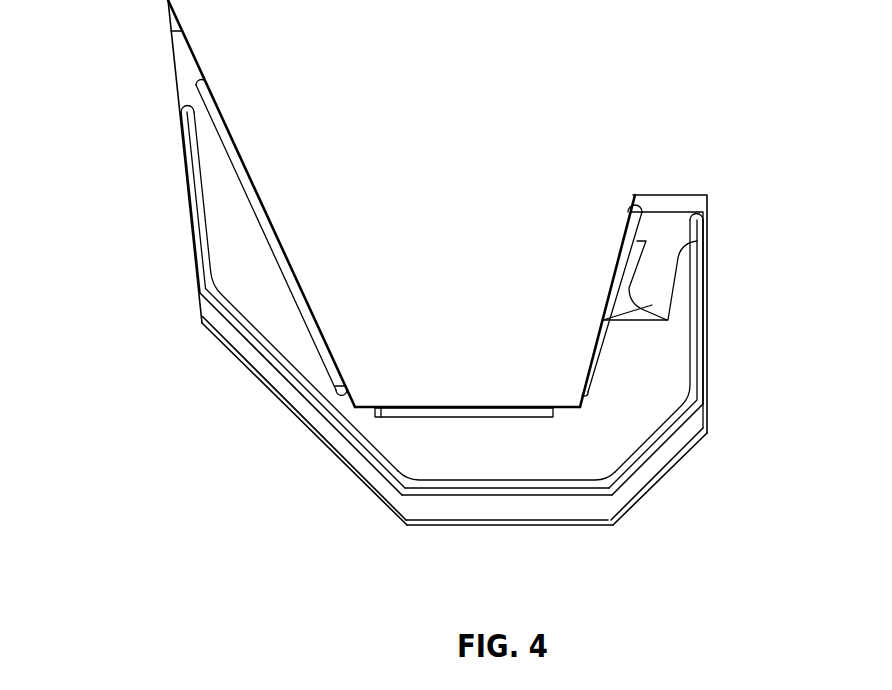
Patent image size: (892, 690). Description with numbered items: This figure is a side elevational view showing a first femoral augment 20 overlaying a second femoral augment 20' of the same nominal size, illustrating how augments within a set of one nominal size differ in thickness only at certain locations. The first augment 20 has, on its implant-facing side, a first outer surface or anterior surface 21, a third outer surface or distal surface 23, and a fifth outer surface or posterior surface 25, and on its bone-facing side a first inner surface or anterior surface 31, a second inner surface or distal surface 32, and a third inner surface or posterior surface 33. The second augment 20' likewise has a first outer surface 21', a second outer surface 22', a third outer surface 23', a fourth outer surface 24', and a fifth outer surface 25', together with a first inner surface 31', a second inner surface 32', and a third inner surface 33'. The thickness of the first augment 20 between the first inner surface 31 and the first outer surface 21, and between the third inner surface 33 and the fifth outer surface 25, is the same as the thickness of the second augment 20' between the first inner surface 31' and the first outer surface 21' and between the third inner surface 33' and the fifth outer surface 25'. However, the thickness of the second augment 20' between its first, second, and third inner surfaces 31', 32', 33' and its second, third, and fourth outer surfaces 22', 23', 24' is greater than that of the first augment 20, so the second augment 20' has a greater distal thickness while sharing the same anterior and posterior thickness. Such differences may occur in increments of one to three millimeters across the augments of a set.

The first augment 20 is at (112, 26).
The second femoral augment 20' is at (290, 419).
The first augment outer surface 21 is at (158, 200).
The first outer surface 21' is at (157, 161).
The second outer surface 22' is at (304, 424).
The third augment outer surface 23 is at (506, 534).
The third outer surface 23' is at (509, 559).
The fourth outer surface 24' is at (677, 477).
The fifth augment outer surface 25 is at (695, 355).
The fifth outer surface 25' is at (712, 314).
The first augment inner surface 31 is at (271, 238).
The first inner surface 31' is at (267, 203).
The second augment inner surface 32 is at (467, 372).
The second inner surface 32' is at (464, 377).
The third augment inner surface 33 is at (597, 298).
The third inner surface 33' is at (618, 272).